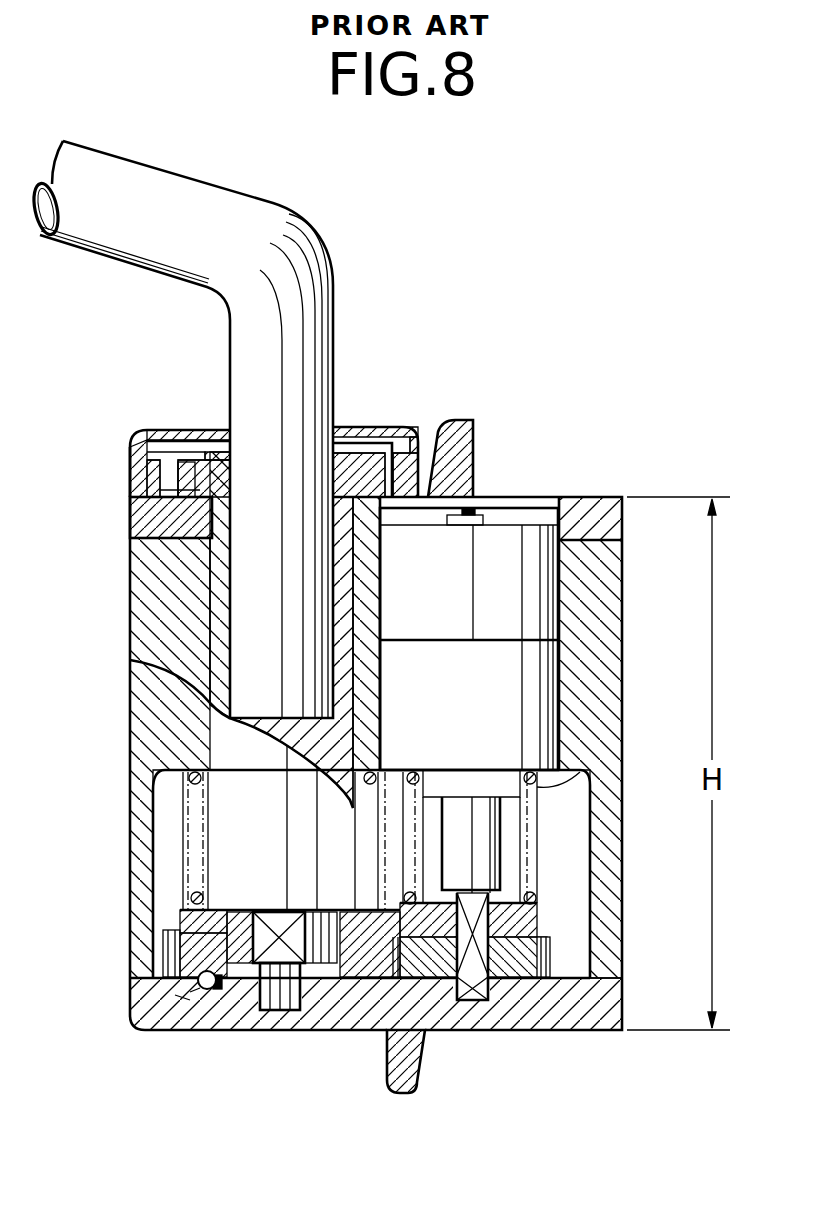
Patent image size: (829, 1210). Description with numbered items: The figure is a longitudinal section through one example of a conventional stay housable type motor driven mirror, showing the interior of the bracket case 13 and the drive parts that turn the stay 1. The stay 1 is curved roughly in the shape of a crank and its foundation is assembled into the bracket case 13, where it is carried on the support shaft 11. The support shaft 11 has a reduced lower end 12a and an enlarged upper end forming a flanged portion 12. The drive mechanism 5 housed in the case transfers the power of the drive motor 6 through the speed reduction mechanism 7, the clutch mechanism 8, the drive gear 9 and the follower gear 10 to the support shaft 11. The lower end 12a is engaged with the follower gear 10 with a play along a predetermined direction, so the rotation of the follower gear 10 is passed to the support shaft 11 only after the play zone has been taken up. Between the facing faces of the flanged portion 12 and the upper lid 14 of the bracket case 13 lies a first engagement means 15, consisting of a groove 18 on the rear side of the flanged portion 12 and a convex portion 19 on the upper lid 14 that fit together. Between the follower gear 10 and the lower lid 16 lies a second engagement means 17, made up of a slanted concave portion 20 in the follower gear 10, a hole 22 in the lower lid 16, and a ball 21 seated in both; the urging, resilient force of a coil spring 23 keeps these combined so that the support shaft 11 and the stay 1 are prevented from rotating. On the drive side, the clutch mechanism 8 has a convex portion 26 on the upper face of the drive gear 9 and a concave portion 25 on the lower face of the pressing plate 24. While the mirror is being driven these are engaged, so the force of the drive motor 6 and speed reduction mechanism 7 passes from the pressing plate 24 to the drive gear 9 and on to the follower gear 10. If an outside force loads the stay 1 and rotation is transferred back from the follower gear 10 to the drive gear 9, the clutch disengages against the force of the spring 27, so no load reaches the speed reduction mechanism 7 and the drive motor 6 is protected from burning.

The stay 1 is at (300, 253).
The drive mechanism 5 is at (487, 563).
The drive motor 6 is at (529, 547).
The speed reduction mechanism 7 is at (533, 680).
The clutch mechanism 8 is at (547, 885).
The drive gear 9 is at (535, 958).
The follower gear 10 is at (163, 928).
The support shaft 11 is at (130, 660).
The flanged portion 12 is at (365, 465).
The lower end 12a is at (278, 953).
The bracket case 13 is at (127, 587).
The upper lid 14 is at (143, 522).
The first engagement means 15 is at (182, 462).
The lower lid 16 is at (403, 1027).
The second engagement means 17 is at (196, 984).
The groove 18 is at (203, 455).
The convex portion 19 is at (177, 502).
The slanted concave portion 20 is at (188, 972).
The ball 21 is at (206, 990).
The hole 22 is at (180, 997).
The coil spring 23 is at (153, 773).
The pressing plate 24 is at (537, 920).
The concave portion 25 is at (470, 985).
The convex portion 26 is at (380, 1022).
The spring 27 is at (538, 783).